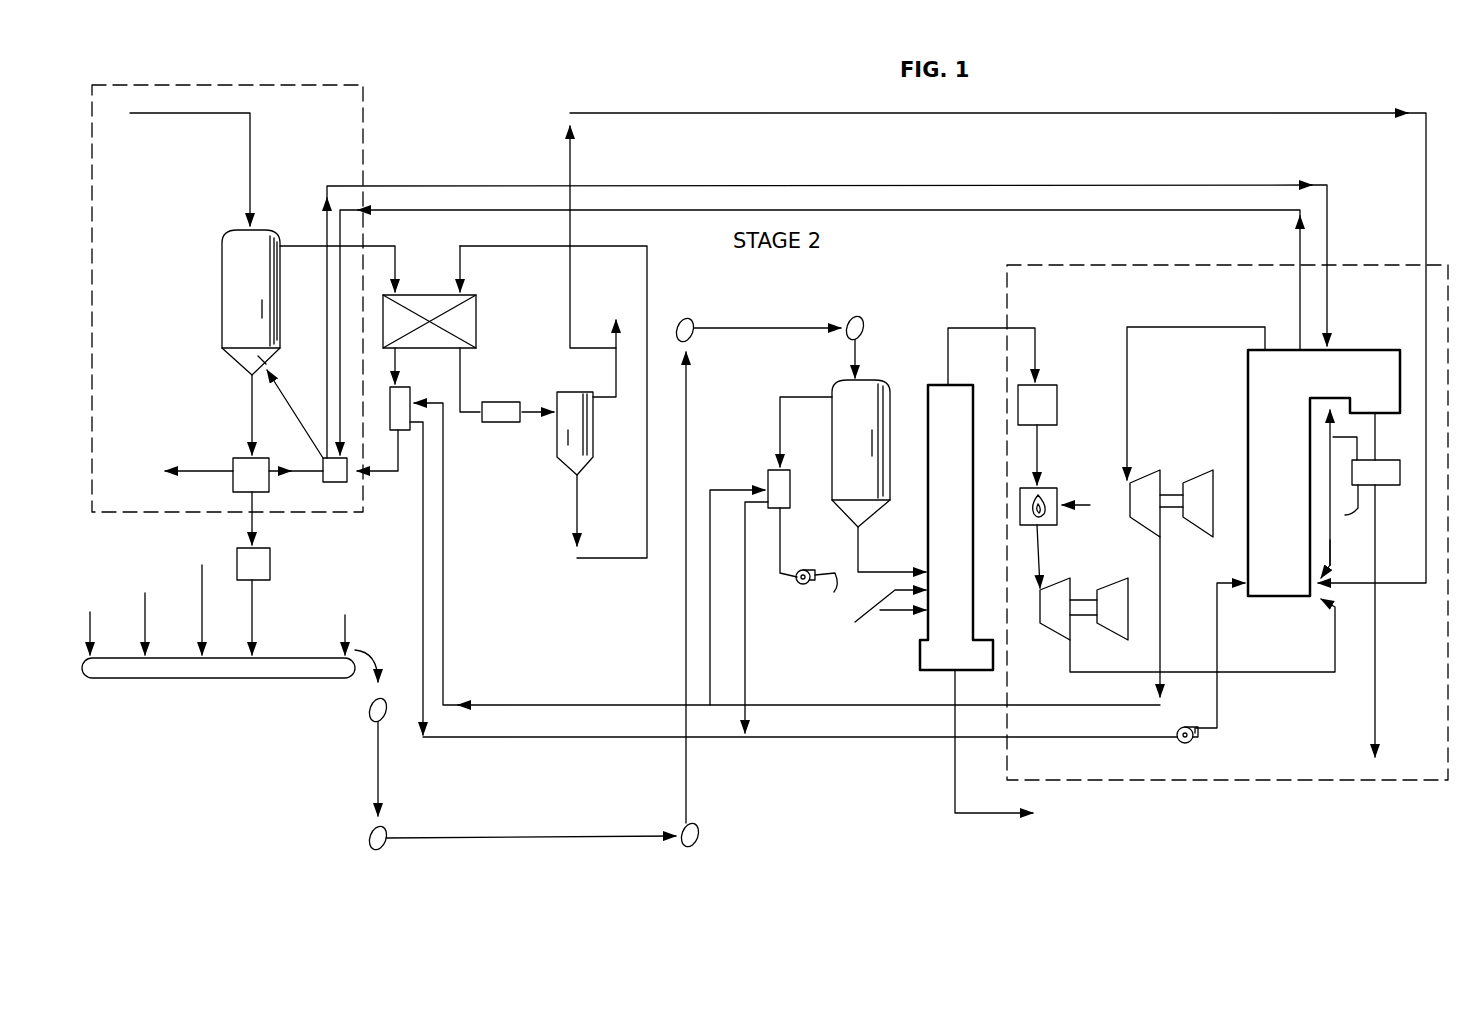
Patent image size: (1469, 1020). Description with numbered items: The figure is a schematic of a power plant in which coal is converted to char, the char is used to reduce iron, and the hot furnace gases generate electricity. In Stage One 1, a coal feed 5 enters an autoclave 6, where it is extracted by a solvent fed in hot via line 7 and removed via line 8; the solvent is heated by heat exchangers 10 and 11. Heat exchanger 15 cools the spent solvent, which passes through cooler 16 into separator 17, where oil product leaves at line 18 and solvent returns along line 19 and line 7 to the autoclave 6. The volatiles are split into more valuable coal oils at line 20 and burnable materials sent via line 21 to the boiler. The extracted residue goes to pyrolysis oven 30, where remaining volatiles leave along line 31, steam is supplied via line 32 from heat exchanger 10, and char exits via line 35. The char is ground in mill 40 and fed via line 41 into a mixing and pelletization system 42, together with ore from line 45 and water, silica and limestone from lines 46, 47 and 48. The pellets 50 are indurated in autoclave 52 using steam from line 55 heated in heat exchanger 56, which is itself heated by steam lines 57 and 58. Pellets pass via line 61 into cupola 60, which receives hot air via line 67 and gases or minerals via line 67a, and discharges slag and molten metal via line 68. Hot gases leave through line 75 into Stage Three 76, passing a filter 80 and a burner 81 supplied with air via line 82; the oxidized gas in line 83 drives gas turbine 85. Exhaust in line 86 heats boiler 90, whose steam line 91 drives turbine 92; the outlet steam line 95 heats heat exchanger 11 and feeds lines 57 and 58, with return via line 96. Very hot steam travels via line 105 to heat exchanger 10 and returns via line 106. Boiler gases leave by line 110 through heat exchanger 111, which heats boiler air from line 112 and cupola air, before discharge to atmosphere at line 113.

The Stage One 1 is at (370, 126).
The coal feed 5 is at (183, 115).
The autoclave 6 is at (221, 262).
The line 7 is at (288, 420).
The line 8 is at (302, 245).
The heat exchanger 10 is at (323, 486).
The heat exchanger 11 is at (410, 396).
The heat exchanger 15 is at (478, 318).
The cooler 16 is at (512, 424).
The separator 17 is at (596, 420).
The line 18 is at (610, 371).
The line 19 is at (386, 472).
The line 20 is at (612, 342).
The line 21 is at (642, 112).
The pyrolysis oven 30 is at (233, 462).
The line 31 is at (212, 473).
The line 32 is at (306, 468).
The line 35 is at (260, 517).
The mill 40 is at (272, 569).
The line 41 is at (256, 614).
The mixing and pelletization system 42 is at (228, 682).
The line 45 is at (350, 618).
The line 46 is at (98, 600).
The line 47 is at (143, 602).
The line 48 is at (198, 574).
The pellets 50 is at (372, 718).
The autoclave 52 is at (874, 380).
The line 55 is at (814, 396).
The heat exchanger 56 is at (791, 478).
The steam line 57 is at (722, 490).
The steam line 58 is at (747, 626).
The cupola 60 is at (920, 655).
The line 61 is at (873, 572).
The line 67 is at (1326, 412).
The line 67a is at (868, 616).
The line 68 is at (954, 766).
The line 75 is at (962, 327).
The Stage Three 76 is at (1398, 262).
The filter 80 is at (1050, 384).
The burner 81 is at (1048, 487).
The line 82 is at (1082, 506).
The line 83 is at (1042, 560).
The gas turbine 85 is at (1053, 632).
The line 86 is at (1135, 672).
The boiler 90 is at (1246, 372).
The steam line 91 is at (1180, 327).
The turbine 92 is at (1146, 478).
The outlet steam line 95 is at (1162, 602).
The line 96 is at (1218, 652).
The line 105 is at (1034, 210).
The line 106 is at (934, 185).
The line 110 is at (1378, 420).
The heat exchanger 111 is at (1380, 490).
The line 112 is at (1333, 528).
The line 113 is at (1378, 662).